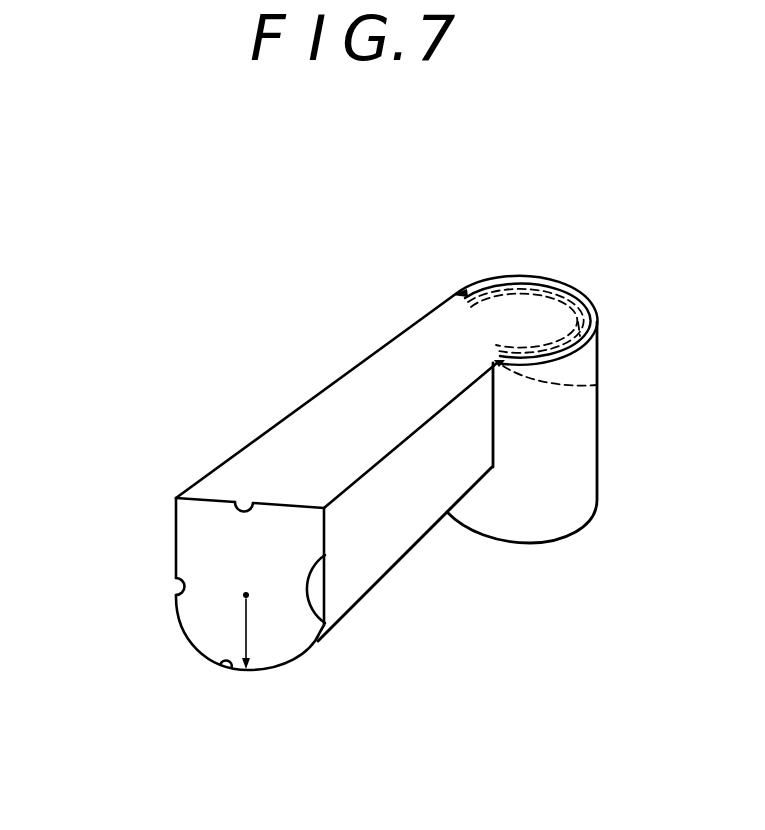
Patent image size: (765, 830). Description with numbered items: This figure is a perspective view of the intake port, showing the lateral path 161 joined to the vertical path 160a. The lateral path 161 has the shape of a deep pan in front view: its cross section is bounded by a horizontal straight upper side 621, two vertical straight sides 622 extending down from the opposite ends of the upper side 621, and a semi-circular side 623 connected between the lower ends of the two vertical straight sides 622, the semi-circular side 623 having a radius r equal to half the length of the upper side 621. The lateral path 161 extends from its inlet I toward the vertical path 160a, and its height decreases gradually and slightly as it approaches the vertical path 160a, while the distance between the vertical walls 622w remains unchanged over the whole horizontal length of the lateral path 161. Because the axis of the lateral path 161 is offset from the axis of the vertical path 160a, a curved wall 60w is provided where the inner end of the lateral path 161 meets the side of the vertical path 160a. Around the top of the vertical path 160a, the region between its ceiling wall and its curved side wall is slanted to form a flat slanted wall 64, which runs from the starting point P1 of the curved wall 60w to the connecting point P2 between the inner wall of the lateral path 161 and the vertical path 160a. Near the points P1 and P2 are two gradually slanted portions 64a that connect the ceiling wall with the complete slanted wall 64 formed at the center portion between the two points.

The lateral path 161 is at (277, 535).
The vertical path 160a is at (585, 460).
The flat slanted wall 64 is at (574, 293).
The gradually slanted portions 64a is at (500, 287).
The curved wall 60w is at (563, 283).
The horizontal straight upper side 621 is at (250, 506).
The vertical straight sides 622 is at (186, 594).
The vertical walls 622w is at (187, 548).
The semi-circular side 623 is at (224, 660).
The starting point of the curved wall P1 is at (457, 292).
The connecting point P2 is at (498, 363).
The inlet I is at (198, 612).
The radius r is at (250, 630).